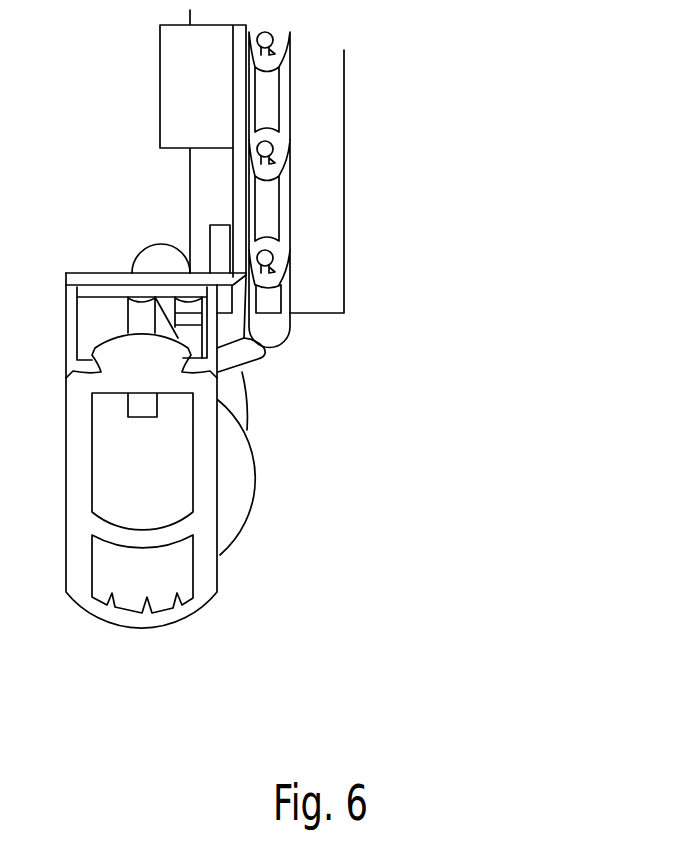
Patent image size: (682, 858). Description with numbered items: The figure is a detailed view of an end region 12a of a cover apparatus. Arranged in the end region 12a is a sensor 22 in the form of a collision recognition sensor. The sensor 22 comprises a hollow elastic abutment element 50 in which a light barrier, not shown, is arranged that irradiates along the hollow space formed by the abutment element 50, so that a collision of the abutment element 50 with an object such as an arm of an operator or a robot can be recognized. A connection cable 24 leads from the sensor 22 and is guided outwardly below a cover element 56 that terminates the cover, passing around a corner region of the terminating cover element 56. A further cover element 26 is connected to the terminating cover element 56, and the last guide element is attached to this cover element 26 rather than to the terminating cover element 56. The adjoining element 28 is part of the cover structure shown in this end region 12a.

The end region 12a is at (277, 319).
The sensor 22 is at (205, 462).
The hollow elastic abutment element 50 is at (224, 450).
The connection cable 24 is at (167, 258).
The cover element 26 is at (288, 202).
The chain link 28 is at (285, 88).
The cover element 56 is at (288, 292).